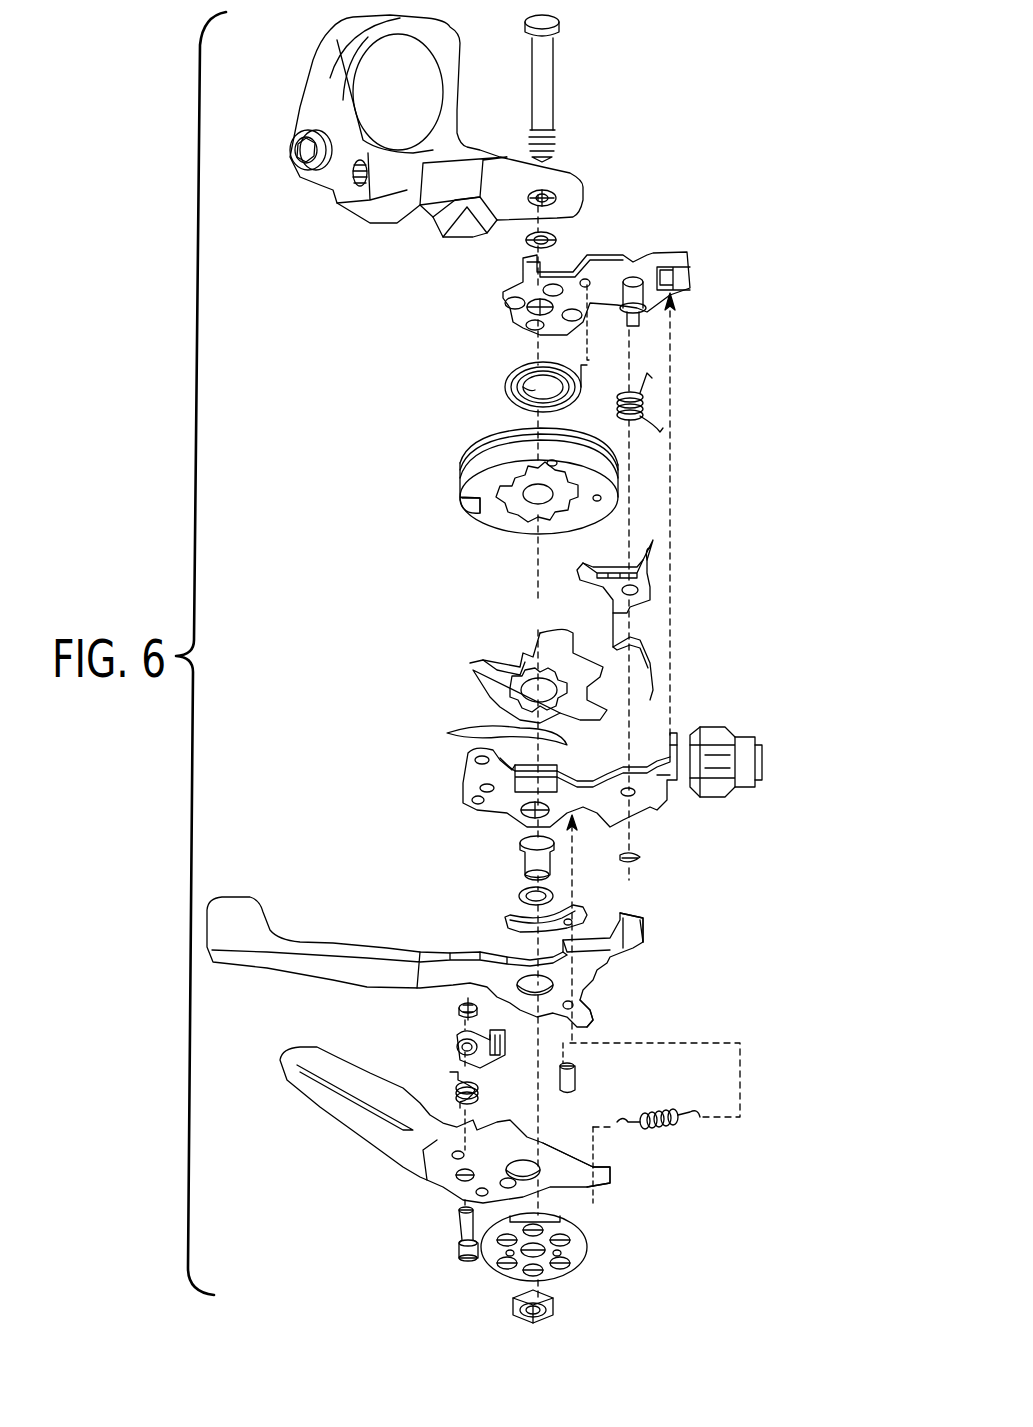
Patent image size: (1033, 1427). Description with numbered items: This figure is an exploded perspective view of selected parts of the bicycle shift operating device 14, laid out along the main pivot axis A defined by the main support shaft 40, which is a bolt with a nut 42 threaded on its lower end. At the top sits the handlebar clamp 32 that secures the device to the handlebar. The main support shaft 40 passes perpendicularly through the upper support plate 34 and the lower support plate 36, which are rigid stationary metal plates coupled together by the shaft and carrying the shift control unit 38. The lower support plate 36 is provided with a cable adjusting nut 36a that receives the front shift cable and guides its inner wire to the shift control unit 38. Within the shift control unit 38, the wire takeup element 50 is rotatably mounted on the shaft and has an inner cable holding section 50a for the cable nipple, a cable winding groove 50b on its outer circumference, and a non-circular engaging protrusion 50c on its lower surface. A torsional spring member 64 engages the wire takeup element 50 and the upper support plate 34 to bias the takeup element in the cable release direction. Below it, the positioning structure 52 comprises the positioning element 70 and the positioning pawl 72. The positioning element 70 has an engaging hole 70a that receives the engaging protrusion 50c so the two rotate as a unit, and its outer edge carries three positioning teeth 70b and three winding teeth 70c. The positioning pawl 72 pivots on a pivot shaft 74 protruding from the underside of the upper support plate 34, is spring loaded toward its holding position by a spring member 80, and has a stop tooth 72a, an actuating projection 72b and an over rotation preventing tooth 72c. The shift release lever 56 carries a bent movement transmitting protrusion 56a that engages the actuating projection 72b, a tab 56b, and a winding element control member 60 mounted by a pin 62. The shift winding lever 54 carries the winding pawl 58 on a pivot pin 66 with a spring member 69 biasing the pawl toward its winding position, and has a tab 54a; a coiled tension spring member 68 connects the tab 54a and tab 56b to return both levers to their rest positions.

The bicycle shift operating device 14 is at (657, 98).
The handlebar clamp 32 is at (318, 50).
The main support shaft 40 is at (555, 90).
The main pivot axis A is at (560, 220).
The upper support plate 34 is at (500, 301).
The pivot shaft 74 is at (627, 310).
The spring member 64 is at (520, 380).
The spring member 80 is at (650, 400).
The wire takeup element 50 is at (470, 472).
The inner cable holding section 50a is at (462, 503).
The cable winding groove 50b is at (600, 458).
The engaging protrusion 50c is at (515, 505).
The positioning structure 52 is at (418, 660).
The shift control unit 38 is at (695, 588).
The positioning pawl 72 is at (583, 583).
The stop tooth 72a is at (585, 568).
The actuating projection 72b is at (650, 548).
The over rotation preventing tooth 72c is at (655, 650).
The positioning element 70 is at (515, 668).
The engaging hole 70a is at (500, 683).
The positioning teeth 70b is at (576, 640).
The winding teeth 70c is at (480, 735).
The lower support plate 36 is at (472, 782).
The cable adjusting nut 36a is at (752, 742).
The winding element control member 60 is at (505, 915).
The shift release lever 56 is at (238, 900).
The movement transmitting protrusion 56a is at (640, 910).
The tab 56b is at (598, 1018).
The winding pawl 58 is at (455, 1037).
The spring member 69 is at (445, 1070).
The pin 62 is at (580, 1073).
The spring member 68 is at (670, 1130).
The shift winding lever 54 is at (270, 1058).
The tab 54a is at (600, 1190).
The pivot pin 66 is at (455, 1228).
The nut 42 is at (560, 1305).